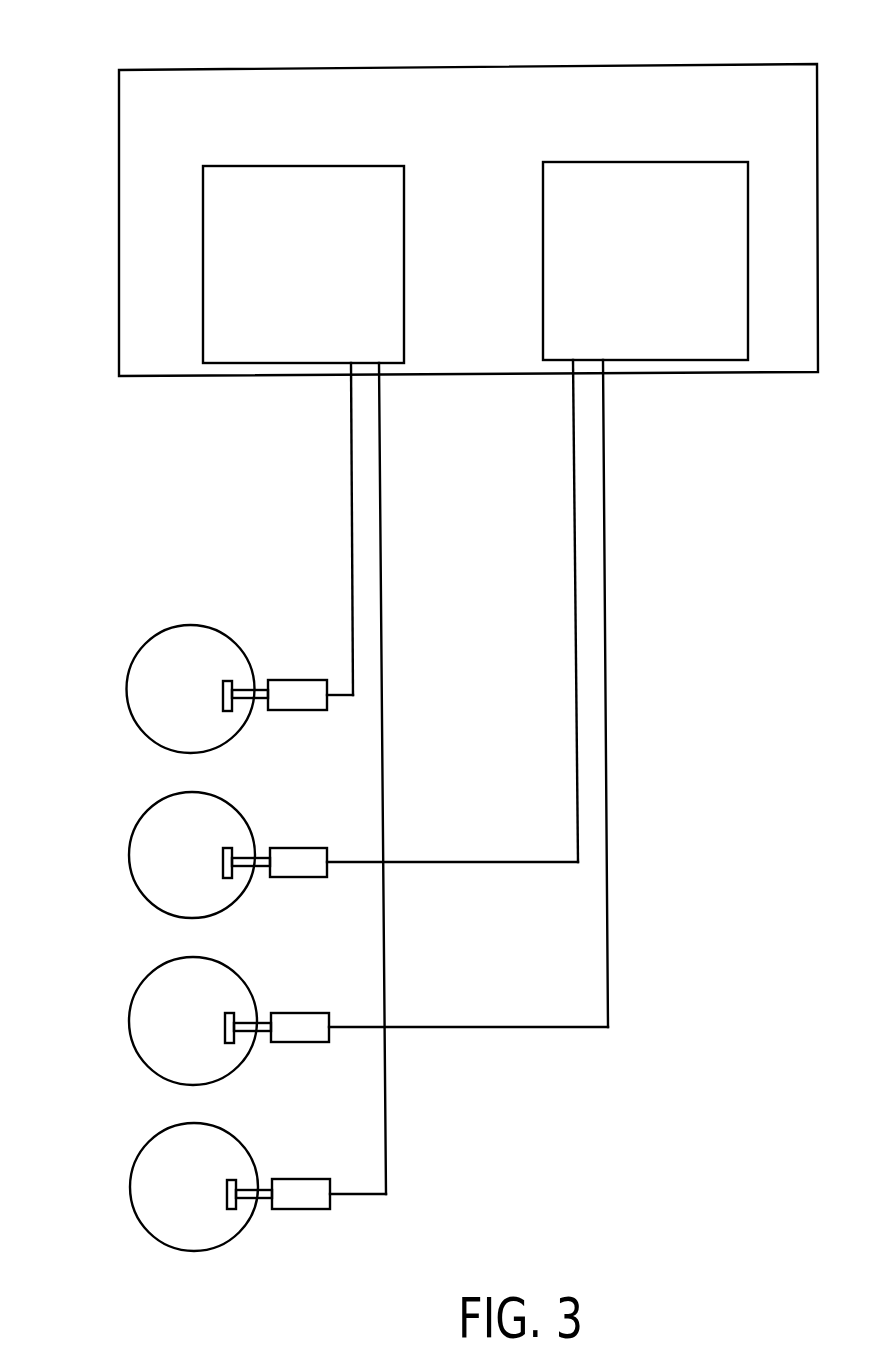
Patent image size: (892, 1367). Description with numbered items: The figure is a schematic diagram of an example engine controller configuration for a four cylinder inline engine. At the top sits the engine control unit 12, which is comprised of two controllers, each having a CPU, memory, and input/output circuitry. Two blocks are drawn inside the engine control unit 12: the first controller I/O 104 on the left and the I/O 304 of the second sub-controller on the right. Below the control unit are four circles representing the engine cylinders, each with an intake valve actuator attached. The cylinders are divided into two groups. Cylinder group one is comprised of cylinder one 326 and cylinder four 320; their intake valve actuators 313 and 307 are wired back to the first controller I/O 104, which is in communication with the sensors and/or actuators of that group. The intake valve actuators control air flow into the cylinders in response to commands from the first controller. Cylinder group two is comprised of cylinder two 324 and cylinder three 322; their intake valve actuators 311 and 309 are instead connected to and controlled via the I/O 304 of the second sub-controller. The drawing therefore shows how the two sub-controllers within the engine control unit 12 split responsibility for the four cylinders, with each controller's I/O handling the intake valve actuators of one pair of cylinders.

The engine control unit 12 is at (700, 63).
The first controller I/O 104 is at (243, 165).
The I/O of the second sub-controller 304 is at (590, 162).
The cylinder four 320 is at (126, 690).
The cylinder three 322 is at (127, 857).
The cylinder two 324 is at (128, 1022).
The cylinder one 326 is at (130, 1188).
The intake valve actuator 307 is at (298, 712).
The intake valve actuator 309 is at (298, 879).
The intake valve actuator 311 is at (299, 1044).
The intake valve actuator 313 is at (300, 1210).